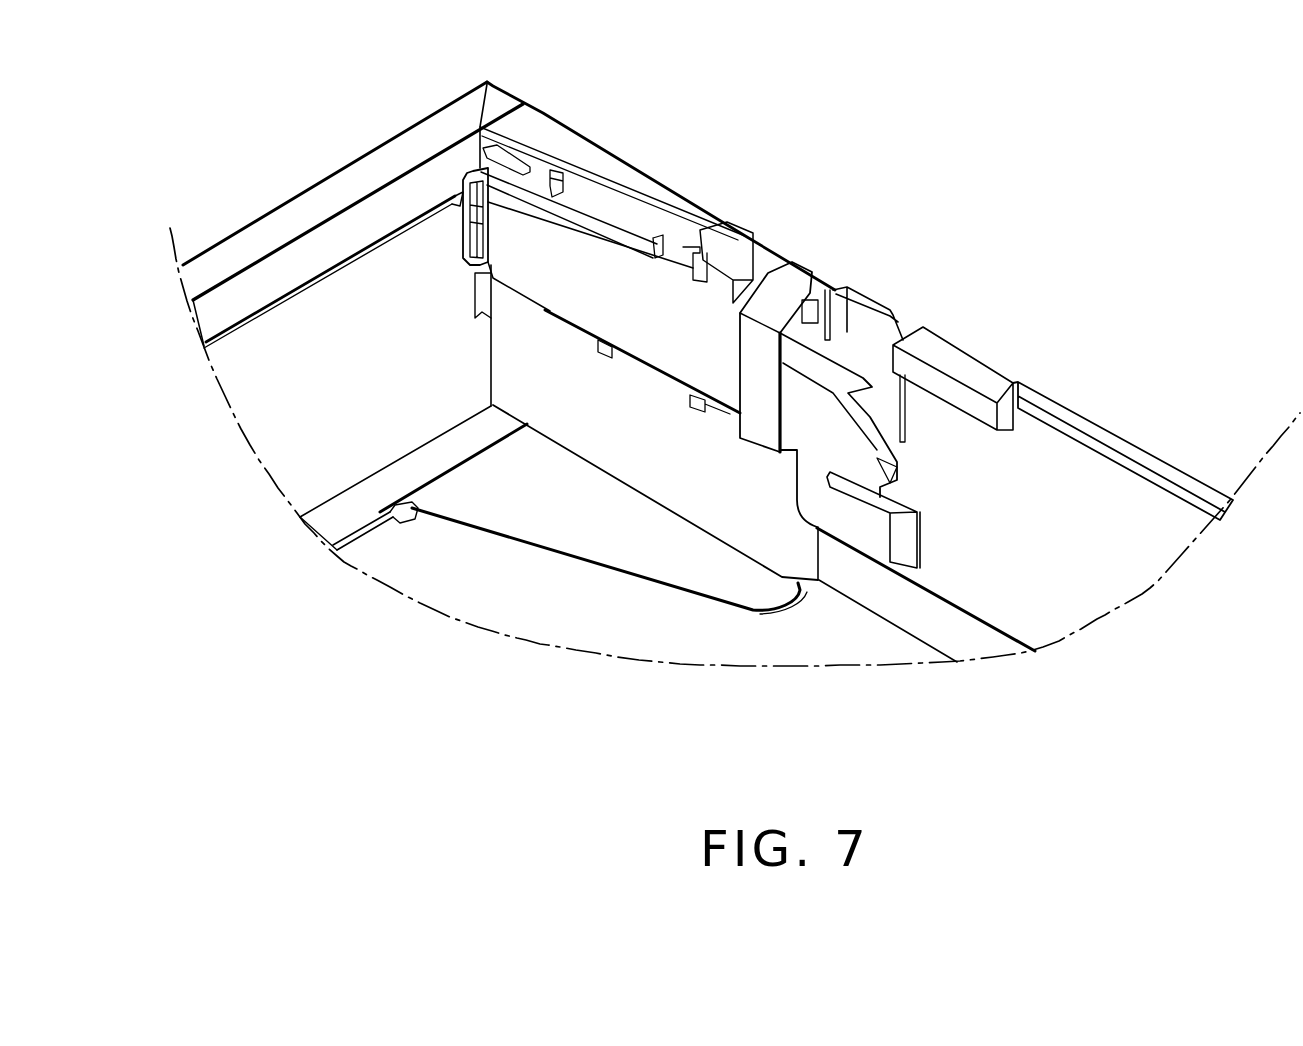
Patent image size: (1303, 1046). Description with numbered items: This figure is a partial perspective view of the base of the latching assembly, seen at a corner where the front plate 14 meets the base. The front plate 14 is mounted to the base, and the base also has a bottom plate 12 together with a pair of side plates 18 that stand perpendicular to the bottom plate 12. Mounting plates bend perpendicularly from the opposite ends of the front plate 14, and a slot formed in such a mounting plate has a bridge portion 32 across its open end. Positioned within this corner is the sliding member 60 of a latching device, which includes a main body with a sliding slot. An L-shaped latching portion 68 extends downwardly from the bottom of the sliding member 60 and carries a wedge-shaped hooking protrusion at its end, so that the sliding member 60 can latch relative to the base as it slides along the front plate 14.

The bottom plate 12 is at (493, 577).
The front plate 14 is at (373, 310).
The side plates 18 is at (1087, 490).
The bridge portion 32 is at (757, 340).
The sliding member 60 is at (545, 250).
The L-shaped latching portion 68 is at (863, 523).